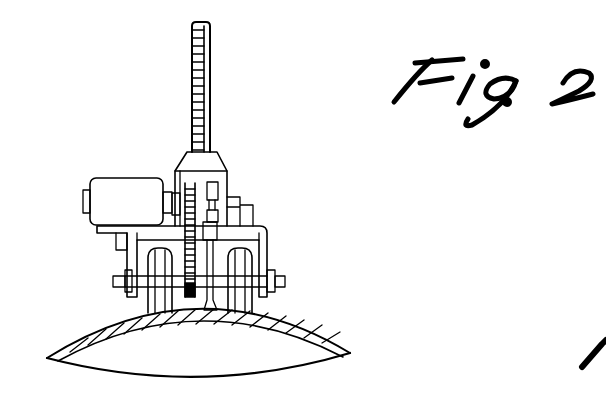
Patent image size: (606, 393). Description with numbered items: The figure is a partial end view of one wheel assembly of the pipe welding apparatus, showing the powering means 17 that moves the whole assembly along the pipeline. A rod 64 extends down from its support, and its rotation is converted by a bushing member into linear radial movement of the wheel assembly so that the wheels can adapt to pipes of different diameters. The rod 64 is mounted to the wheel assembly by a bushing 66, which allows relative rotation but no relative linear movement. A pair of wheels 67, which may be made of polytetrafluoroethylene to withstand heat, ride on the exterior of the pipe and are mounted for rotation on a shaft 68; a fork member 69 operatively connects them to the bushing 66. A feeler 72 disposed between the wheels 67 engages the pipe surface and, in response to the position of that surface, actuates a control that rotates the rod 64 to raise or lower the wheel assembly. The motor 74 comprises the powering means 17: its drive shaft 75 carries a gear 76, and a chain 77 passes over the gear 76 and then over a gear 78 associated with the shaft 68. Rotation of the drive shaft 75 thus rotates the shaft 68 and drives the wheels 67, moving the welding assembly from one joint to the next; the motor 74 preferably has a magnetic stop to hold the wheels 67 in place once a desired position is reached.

The powering means 17 is at (117, 112).
The rod 64 is at (209, 54).
The bushing 66 is at (207, 145).
The wheels 67 is at (162, 316).
The shaft 68 is at (285, 283).
The fork member 69 is at (268, 226).
The feeler 72 is at (221, 246).
The motor 74 is at (105, 187).
The drive shaft 75 is at (177, 202).
The gear 76 is at (196, 188).
The chain 77 is at (124, 236).
The gear 78 is at (203, 305).